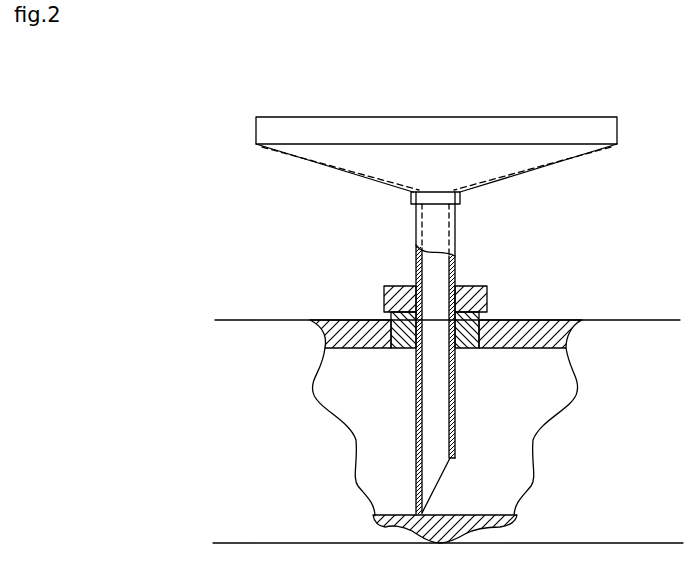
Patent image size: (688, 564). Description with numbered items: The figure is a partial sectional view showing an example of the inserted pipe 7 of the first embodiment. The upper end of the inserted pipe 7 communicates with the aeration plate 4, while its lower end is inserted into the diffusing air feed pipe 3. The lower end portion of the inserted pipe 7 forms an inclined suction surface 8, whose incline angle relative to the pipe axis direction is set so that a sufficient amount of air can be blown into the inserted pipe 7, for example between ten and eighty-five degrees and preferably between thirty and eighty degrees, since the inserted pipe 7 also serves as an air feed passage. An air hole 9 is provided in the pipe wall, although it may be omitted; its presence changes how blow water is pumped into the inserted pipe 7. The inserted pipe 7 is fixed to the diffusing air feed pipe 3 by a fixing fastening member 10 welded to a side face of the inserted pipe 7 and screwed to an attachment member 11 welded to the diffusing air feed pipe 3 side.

The diffusing air feed pipe 3 is at (637, 320).
The aeration plate 4 is at (620, 131).
The inserted pipe 7 is at (443, 405).
The inclined suction surface 8 is at (435, 487).
The air hole 9 is at (416, 394).
The fixing fastening member 10 is at (400, 286).
The attachment member 11 is at (488, 319).